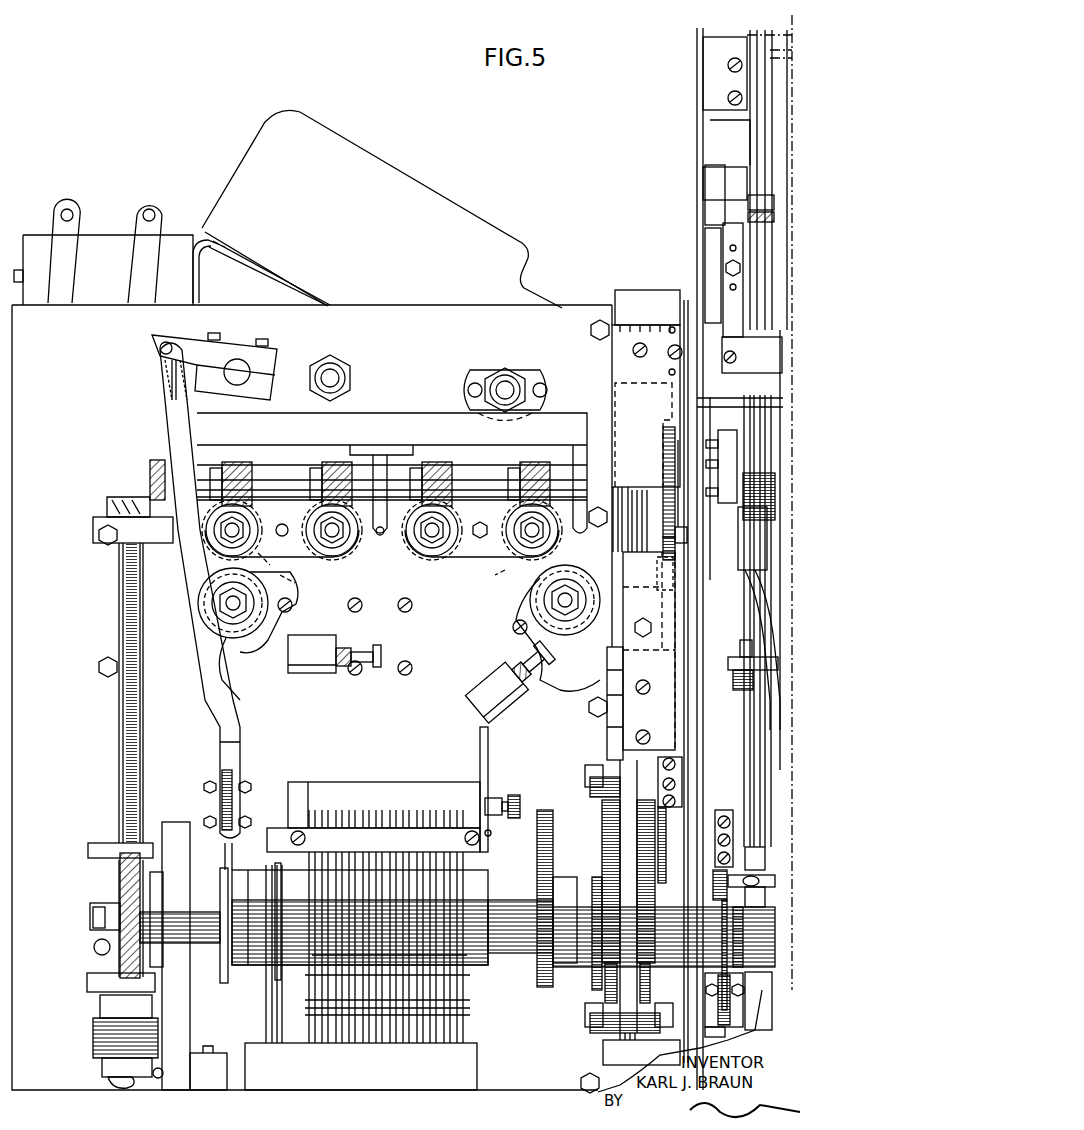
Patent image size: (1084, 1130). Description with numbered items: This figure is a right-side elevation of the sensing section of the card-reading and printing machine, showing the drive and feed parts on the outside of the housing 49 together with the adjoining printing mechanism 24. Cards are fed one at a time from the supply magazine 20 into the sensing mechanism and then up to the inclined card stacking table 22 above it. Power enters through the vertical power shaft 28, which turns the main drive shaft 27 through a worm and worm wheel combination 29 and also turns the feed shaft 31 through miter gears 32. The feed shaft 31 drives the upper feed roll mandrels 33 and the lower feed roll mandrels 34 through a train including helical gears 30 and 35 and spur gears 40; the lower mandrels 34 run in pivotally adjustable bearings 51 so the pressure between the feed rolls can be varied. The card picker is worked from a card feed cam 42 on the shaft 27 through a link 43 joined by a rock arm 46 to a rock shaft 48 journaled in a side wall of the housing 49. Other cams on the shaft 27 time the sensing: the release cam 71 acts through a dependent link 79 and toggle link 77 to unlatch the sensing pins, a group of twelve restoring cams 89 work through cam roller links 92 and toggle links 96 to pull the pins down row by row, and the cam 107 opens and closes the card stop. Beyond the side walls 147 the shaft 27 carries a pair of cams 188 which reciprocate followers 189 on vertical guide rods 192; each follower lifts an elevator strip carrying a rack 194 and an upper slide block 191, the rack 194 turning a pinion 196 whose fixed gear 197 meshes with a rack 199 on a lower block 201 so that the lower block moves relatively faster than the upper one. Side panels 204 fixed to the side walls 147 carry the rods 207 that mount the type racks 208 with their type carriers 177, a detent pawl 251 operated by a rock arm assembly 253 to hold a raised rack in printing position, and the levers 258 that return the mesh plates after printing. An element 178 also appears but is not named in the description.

The supply magazine 20 is at (90, 278).
The card stacking table 22 is at (523, 292).
The printing mechanism 24 is at (695, 119).
The main drive shaft 27 is at (505, 903).
The vertical power shaft 28 is at (120, 692).
The worm and worm wheel combination 29 is at (126, 879).
The helical gears 30 is at (233, 464).
The feed shaft 31 is at (290, 470).
The miter gears 32 is at (134, 495).
The upper feed roll mandrels 33 is at (240, 532).
The lower feed roll mandrels 34 is at (240, 616).
The helical gears 35 is at (250, 522).
The spur gears 40 is at (282, 572).
The card feed cam 42 is at (227, 977).
The link 43 is at (210, 688).
The rock arm 46 is at (192, 350).
The rock shaft 48 is at (246, 371).
The housing 49 is at (226, 305).
The bearings 51 is at (292, 612).
The release cam 71 is at (278, 975).
The toggle link 77 is at (270, 1043).
The dependent link 79 is at (266, 1004).
The cams 89 is at (482, 1006).
The cam roller link 92 is at (388, 822).
The toggle link 96 is at (393, 1030).
The cam 107 is at (465, 952).
The side walls 147 is at (697, 133).
The type carriers 177 is at (750, 250).
The block 178 is at (758, 196).
The cams 188 is at (653, 972).
The followers 189 is at (600, 782).
The upper slide block 191 is at (612, 350).
The vertical guide rods 192 is at (628, 522).
The rack 194 is at (663, 438).
The pinion 196 is at (670, 594).
The gear 197 is at (678, 502).
The rack 199 is at (631, 660).
The lower block 201 is at (607, 738).
The side panels 204 is at (718, 393).
The rods 207 is at (760, 660).
The type racks 208 is at (768, 316).
The detent pawl 251 is at (776, 420).
The rock arm assembly 253 is at (775, 588).
The levers 258 is at (727, 1017).